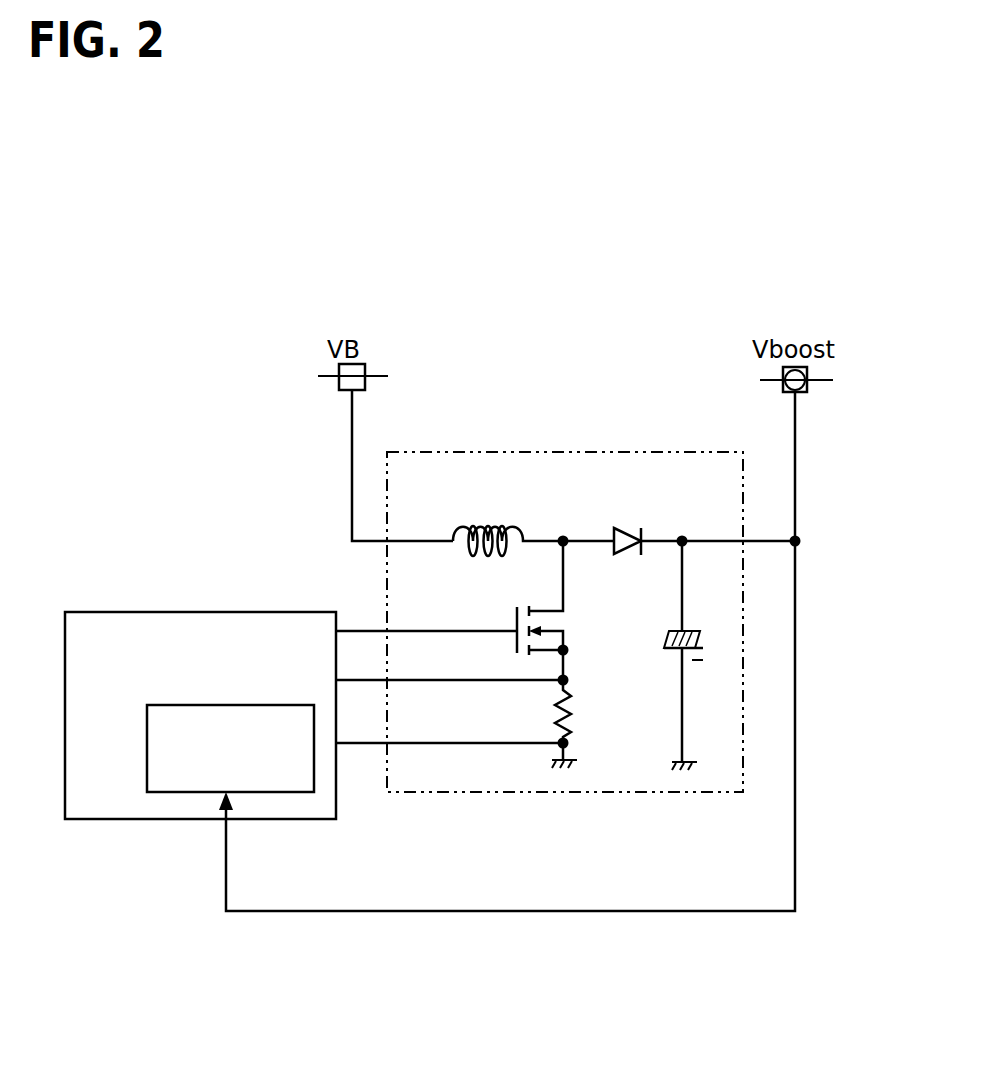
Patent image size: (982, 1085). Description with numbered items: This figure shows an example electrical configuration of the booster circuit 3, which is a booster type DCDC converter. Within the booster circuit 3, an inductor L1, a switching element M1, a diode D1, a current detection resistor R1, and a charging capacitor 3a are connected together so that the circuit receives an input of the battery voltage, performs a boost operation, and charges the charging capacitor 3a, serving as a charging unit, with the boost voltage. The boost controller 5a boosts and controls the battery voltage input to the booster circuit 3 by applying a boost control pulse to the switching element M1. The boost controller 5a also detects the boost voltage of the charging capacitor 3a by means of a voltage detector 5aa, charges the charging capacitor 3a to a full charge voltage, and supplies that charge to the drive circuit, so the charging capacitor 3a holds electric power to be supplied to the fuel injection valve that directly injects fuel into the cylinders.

The booster circuit 3 is at (597, 452).
The charging capacitor 3a is at (662, 638).
The inductor L1 is at (482, 521).
The diode D1 is at (628, 530).
The switching element M1 is at (515, 616).
The current detection resistor R1 is at (572, 708).
The boost controller 5a is at (180, 612).
The voltage detector 5aa is at (147, 752).